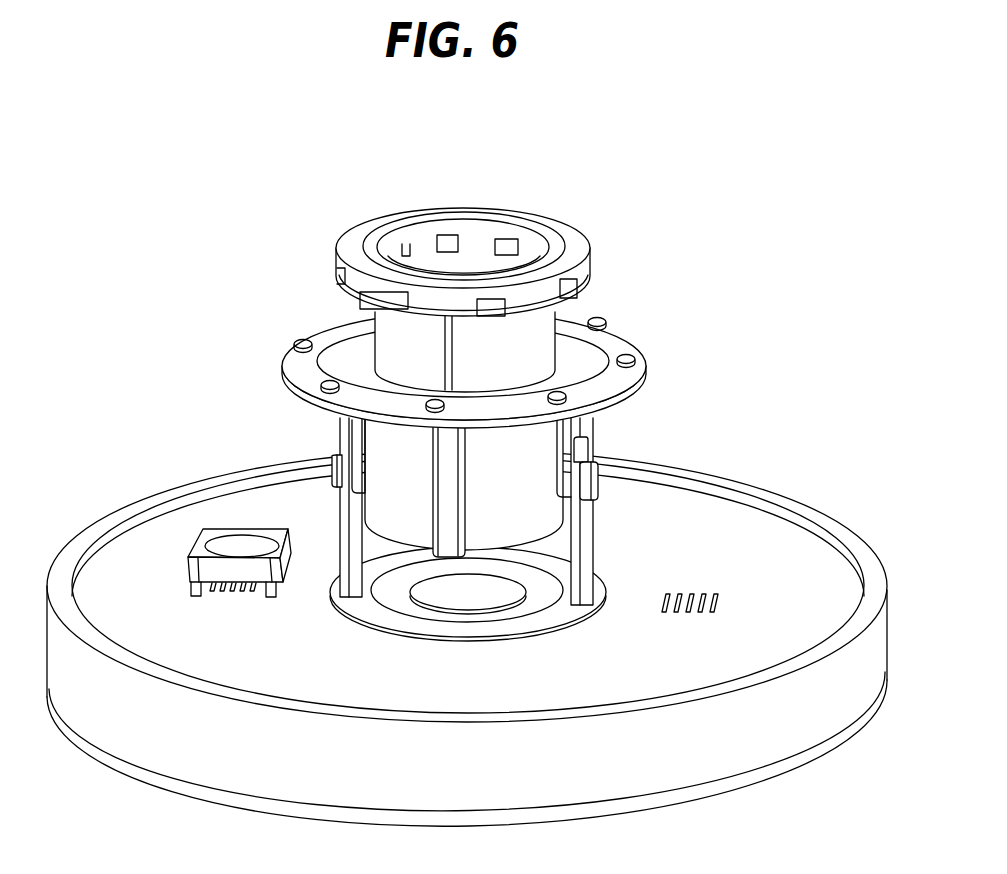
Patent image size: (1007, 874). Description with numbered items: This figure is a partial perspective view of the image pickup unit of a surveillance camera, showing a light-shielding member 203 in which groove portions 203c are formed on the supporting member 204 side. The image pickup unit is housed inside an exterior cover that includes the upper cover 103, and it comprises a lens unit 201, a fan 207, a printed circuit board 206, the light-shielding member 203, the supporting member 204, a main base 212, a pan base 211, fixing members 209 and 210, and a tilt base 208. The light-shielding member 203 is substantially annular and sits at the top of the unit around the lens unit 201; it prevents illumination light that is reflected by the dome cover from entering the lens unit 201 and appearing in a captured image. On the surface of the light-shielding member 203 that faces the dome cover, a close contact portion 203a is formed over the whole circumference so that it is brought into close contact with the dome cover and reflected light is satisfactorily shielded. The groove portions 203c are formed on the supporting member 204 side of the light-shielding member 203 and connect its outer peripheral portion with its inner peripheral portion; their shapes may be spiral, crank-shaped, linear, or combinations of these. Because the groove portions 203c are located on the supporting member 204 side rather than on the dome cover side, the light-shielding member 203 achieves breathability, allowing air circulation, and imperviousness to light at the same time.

The upper cover 103 is at (737, 758).
The lens unit 201 is at (472, 260).
The light-shielding member 203 is at (592, 268).
The close contact portion 203a is at (356, 244).
The groove portions 203c is at (408, 302).
The supporting member 204 is at (528, 340).
The printed circuit board 206 is at (637, 353).
The fan 207 is at (232, 544).
The tilt base 208 is at (560, 468).
The fixing member 209 is at (338, 460).
The fixing member 210 is at (397, 588).
The pan base 211 is at (587, 543).
The main base 212 is at (788, 538).